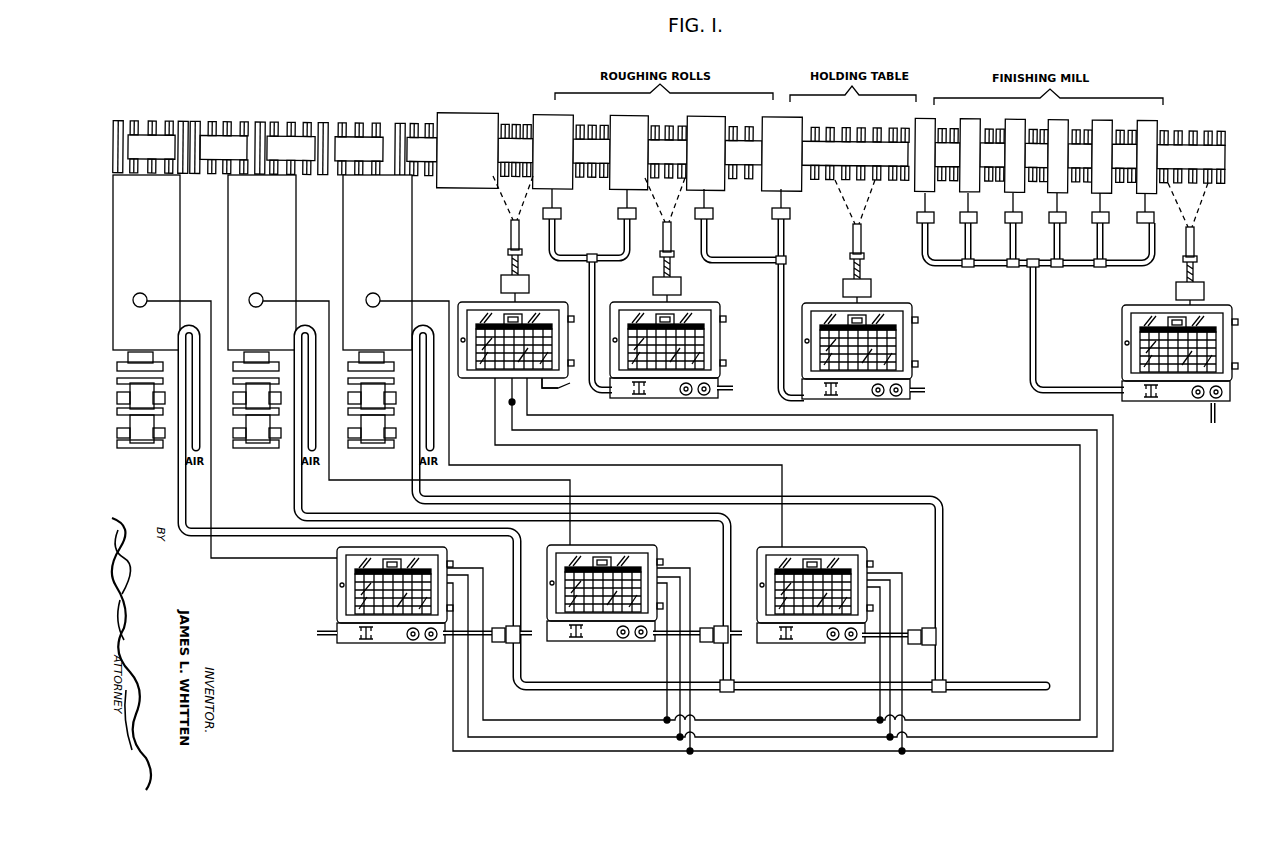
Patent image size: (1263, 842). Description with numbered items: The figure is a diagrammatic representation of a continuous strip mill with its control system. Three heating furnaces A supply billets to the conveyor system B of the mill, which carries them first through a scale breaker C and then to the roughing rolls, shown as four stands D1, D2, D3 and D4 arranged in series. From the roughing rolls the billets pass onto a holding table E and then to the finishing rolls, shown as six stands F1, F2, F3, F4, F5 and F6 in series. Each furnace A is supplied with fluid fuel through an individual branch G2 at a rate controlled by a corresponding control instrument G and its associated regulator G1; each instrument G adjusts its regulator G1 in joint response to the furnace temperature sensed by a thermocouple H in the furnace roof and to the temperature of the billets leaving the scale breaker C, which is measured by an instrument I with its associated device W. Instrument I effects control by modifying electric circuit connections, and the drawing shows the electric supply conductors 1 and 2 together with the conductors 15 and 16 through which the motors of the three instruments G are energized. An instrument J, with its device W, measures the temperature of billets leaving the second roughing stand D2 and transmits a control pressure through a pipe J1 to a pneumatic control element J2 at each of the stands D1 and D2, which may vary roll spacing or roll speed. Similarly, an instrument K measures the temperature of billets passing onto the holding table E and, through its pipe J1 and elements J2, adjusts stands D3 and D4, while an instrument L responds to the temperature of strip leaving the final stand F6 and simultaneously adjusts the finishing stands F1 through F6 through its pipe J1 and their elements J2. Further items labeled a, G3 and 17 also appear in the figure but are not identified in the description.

The conveyor table sections a is at (212, 138).
The conveyor system B is at (305, 127).
The heating furnace A is at (262, 311).
The thermocouple H is at (372, 316).
The scale breaker C is at (468, 151).
The first stand of roughing rolls D1 is at (553, 152).
The second stand of roughing rolls D2 is at (629, 152).
The third stand of roughing rolls D3 is at (706, 153).
The fourth stand of roughing rolls D4 is at (782, 154).
The holding table E is at (855, 153).
The first stand of finishing rolls F1 is at (925, 154).
The second stand of finishing rolls F2 is at (970, 155).
The third stand of finishing rolls F3 is at (1015, 155).
The fourth stand of finishing rolls F4 is at (1058, 156).
The fifth stand of finishing rolls F5 is at (1102, 156).
The sixth stand of finishing rolls F6 is at (1147, 156).
The control pipe J1 is at (597, 290).
The pneumatic control element J2 is at (618, 213).
The instrument I is at (477, 304).
The instrument J is at (703, 304).
The instrument K is at (885, 306).
The instrument L is at (1148, 309).
The device W is at (1200, 285).
The control instrument G is at (337, 601).
The regulator G1 is at (520, 643).
The fuel branch G2 is at (293, 496).
The fuel supply pipe G3 is at (968, 688).
The electric supply conductor 1 is at (515, 402).
The electric supply conductor 2 is at (558, 388).
The conductor 15 is at (1113, 554).
The conductor 16 is at (1097, 517).
The inner control line 17 is at (1080, 481).